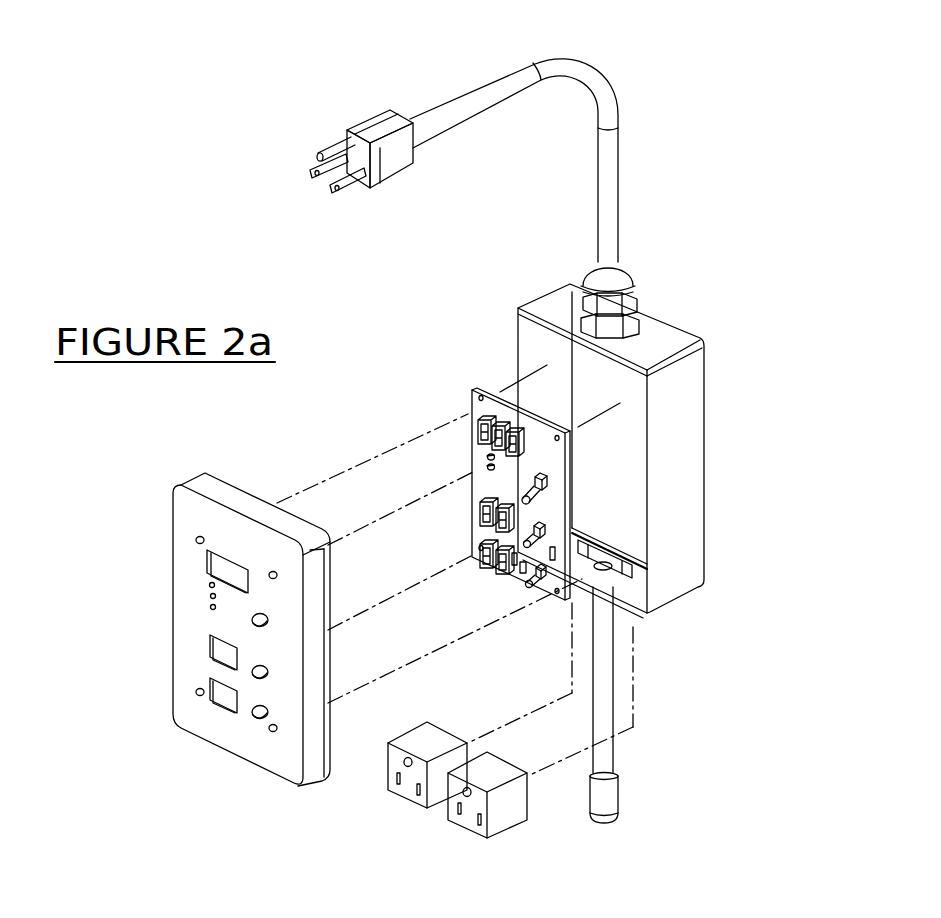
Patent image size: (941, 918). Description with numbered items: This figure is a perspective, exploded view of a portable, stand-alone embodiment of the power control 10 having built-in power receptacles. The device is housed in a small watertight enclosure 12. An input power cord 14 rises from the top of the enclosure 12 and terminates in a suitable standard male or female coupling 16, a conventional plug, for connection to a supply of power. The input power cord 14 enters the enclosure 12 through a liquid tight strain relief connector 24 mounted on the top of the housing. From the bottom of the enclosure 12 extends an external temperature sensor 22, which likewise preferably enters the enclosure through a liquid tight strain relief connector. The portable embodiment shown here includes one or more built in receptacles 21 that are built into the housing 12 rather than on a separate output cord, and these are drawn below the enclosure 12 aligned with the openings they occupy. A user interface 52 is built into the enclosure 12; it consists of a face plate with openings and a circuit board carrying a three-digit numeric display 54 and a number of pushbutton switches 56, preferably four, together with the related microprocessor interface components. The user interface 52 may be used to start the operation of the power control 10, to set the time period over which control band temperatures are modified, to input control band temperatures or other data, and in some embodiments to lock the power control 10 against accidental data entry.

The power control 10 is at (812, 302).
The enclosure 12 is at (710, 455).
The input power cord 14 is at (620, 150).
The coupling 16 is at (347, 125).
The built in receptacles 21 is at (460, 828).
The external temperature sensor 22 is at (612, 752).
The liquid tight strain relief connector 24 is at (634, 277).
The user interface 52 is at (211, 752).
The 3-digit numeric display 54 is at (466, 414).
The pushbutton switches 56 is at (488, 463).